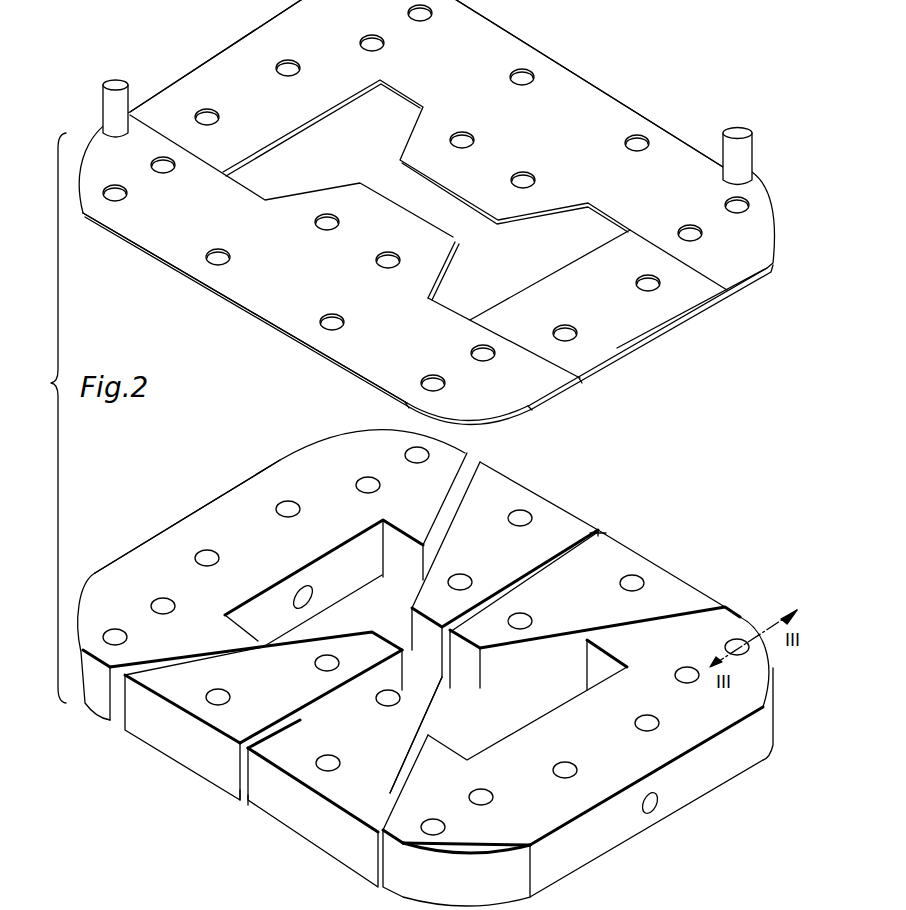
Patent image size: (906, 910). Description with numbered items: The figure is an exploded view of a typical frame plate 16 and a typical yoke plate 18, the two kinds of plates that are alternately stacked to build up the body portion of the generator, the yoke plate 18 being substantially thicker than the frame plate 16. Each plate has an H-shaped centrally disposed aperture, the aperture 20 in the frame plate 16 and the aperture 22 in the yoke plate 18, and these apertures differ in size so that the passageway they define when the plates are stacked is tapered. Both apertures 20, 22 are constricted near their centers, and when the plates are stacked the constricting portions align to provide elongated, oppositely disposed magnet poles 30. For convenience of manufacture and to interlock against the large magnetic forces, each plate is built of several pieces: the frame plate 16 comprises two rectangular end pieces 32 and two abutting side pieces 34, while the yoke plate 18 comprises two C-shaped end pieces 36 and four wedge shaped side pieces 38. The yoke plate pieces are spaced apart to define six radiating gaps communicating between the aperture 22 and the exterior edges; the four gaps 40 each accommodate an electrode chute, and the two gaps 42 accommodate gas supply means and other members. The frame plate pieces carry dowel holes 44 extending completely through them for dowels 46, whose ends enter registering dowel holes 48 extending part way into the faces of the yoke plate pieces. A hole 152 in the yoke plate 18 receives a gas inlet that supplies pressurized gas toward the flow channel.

The frame plate 16 is at (262, 318).
The yoke plate 18 is at (200, 510).
The aperture 20 is at (421, 206).
The aperture 22 is at (390, 618).
The magnet pole 30 is at (455, 240).
The rectangular end piece 32 is at (236, 53).
The side piece 34 is at (598, 90).
The C-shaped end piece 36 is at (265, 471).
The wedge shaped side piece 38 is at (608, 541).
The gap 40 is at (471, 460).
The gap 42 is at (512, 590).
The dowel hole 44 is at (115, 188).
The dowel 46 is at (104, 105).
The dowel hole 48 is at (122, 630).
The hole 152 is at (312, 596).